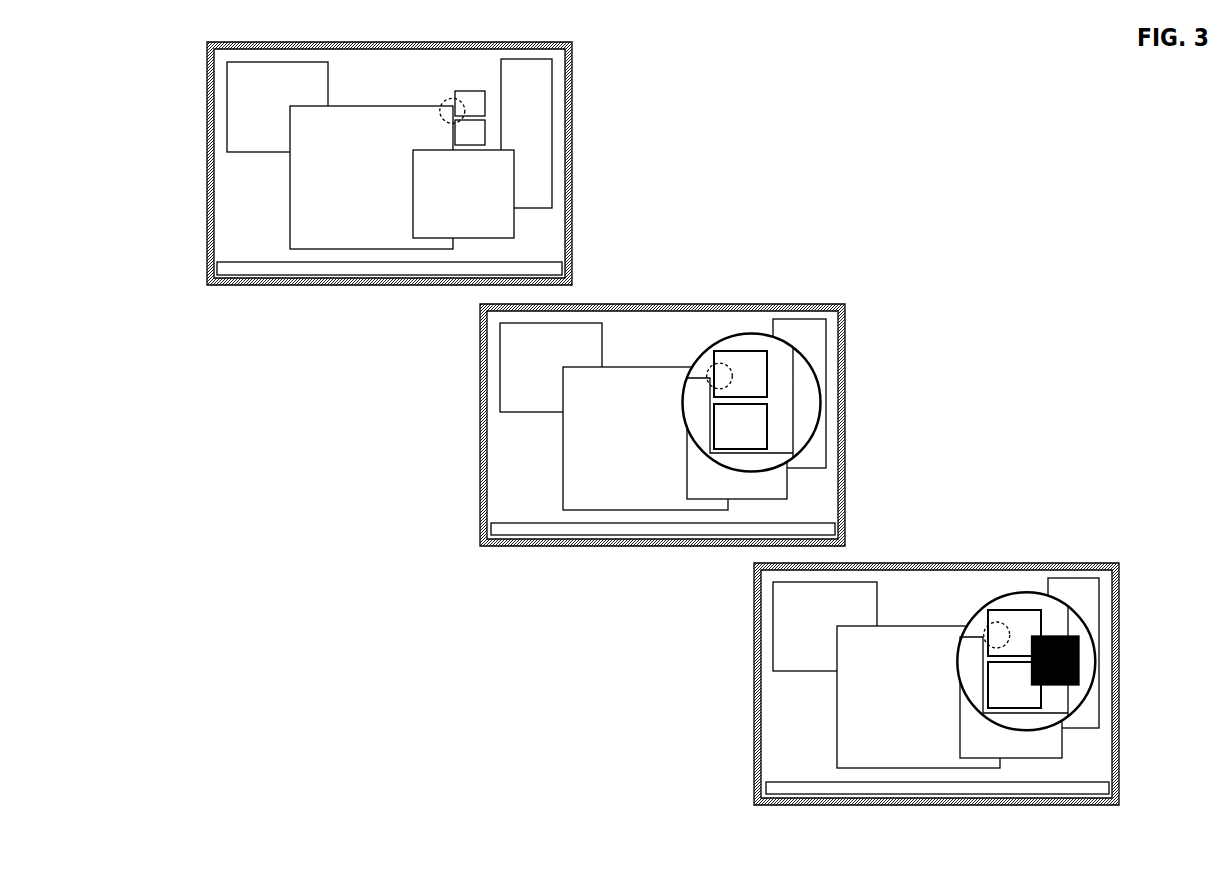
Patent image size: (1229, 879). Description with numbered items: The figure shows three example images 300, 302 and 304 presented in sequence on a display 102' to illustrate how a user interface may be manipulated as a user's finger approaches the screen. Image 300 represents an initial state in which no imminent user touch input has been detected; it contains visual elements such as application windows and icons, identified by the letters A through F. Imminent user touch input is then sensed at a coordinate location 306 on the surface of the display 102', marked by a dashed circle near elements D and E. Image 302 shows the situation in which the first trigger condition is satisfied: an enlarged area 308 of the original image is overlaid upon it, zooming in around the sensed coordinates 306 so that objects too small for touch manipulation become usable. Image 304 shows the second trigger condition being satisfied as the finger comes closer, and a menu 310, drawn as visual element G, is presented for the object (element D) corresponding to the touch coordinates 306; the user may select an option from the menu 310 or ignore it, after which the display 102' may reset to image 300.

The display 102' is at (629, 423).
The image 300 is at (259, 254).
The image 302 is at (532, 514).
The image 304 is at (807, 774).
The coordinate location 306 is at (445, 103).
The enlarged area 308 is at (685, 419).
The menu 310 is at (1080, 657).